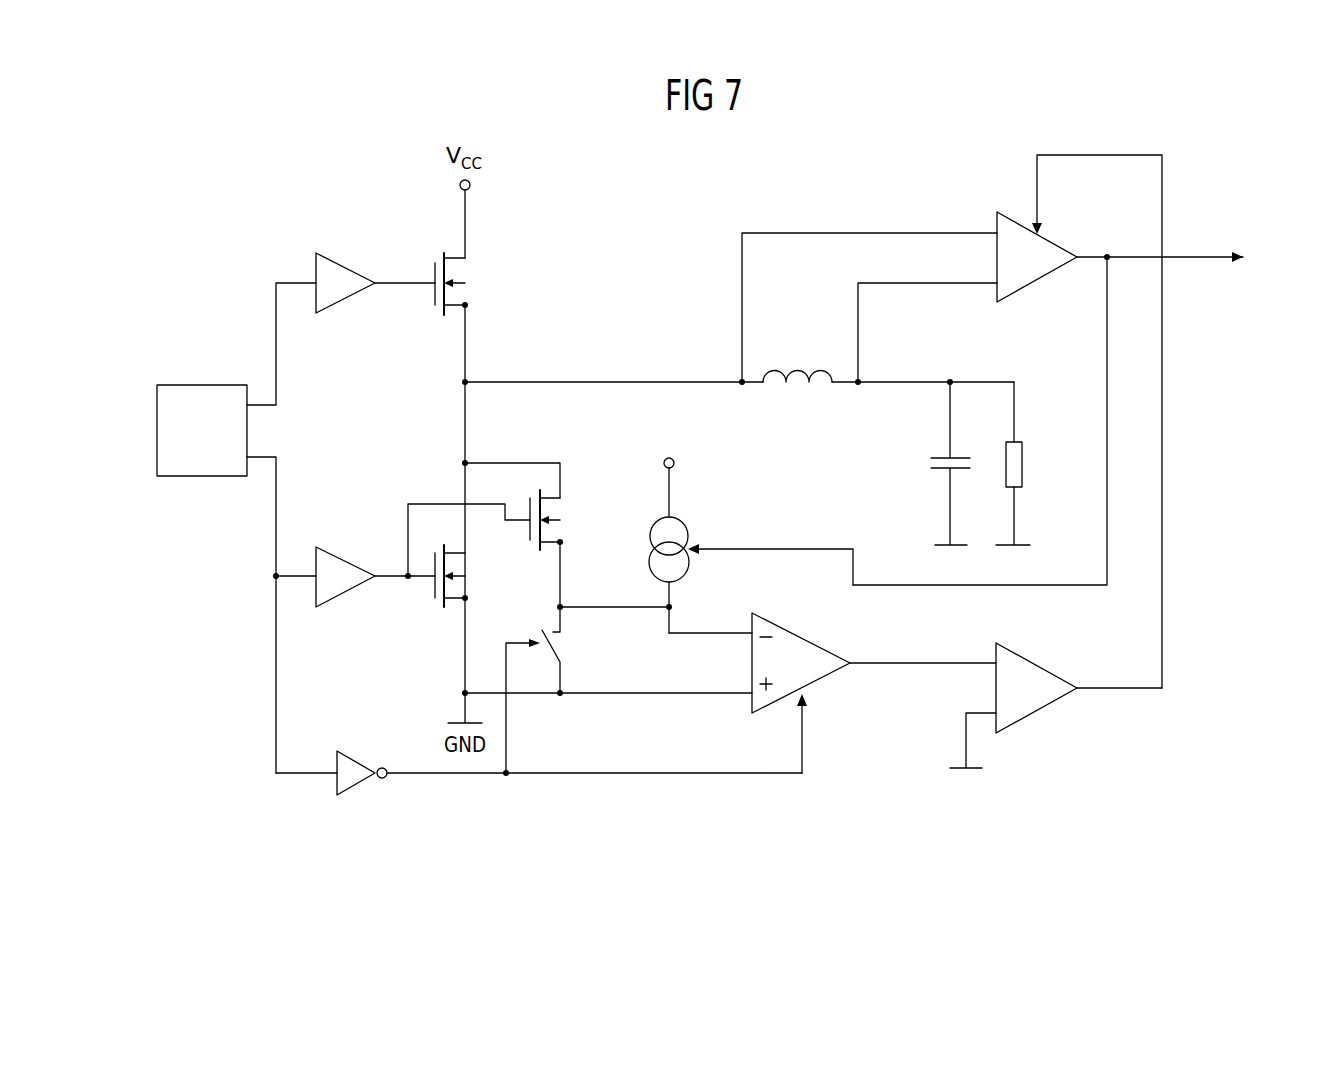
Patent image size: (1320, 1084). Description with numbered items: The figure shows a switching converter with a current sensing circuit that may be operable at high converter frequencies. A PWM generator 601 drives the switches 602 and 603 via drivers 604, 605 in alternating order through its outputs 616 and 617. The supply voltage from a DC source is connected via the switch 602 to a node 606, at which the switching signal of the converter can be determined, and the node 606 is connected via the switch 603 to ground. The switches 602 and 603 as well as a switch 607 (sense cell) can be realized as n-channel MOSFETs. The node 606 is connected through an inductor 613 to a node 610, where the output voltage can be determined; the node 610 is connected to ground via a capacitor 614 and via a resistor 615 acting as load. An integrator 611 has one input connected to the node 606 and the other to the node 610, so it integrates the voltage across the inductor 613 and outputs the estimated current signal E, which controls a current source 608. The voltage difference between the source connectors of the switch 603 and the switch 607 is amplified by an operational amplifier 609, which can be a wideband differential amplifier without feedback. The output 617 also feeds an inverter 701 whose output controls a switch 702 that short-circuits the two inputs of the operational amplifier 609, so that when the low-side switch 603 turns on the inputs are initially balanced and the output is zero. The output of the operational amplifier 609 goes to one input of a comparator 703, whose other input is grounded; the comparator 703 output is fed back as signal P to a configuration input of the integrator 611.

The PWM generator 601 is at (193, 385).
The switch 602 is at (467, 280).
The switch 603 is at (427, 600).
The driver 604 is at (342, 255).
The driver 605 is at (342, 549).
The node 606 is at (462, 382).
The switch 607 is at (558, 509).
The current source 608 is at (689, 517).
The operational amplifier 609 is at (820, 684).
The node 610 is at (858, 388).
The integrator 611 is at (1010, 213).
The inductor 613 is at (786, 372).
The capacitor 614 is at (940, 471).
The resistor 615 is at (1023, 466).
The output 616 is at (252, 402).
The output 617 is at (247, 460).
The inverter 701 is at (356, 752).
The switch 702 is at (562, 645).
The comparator 703 is at (1037, 714).